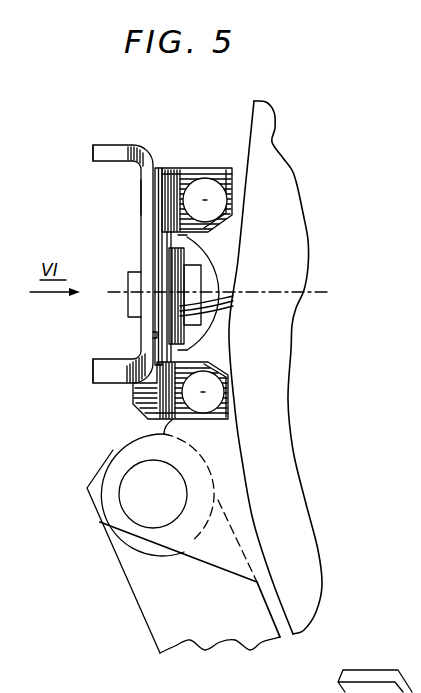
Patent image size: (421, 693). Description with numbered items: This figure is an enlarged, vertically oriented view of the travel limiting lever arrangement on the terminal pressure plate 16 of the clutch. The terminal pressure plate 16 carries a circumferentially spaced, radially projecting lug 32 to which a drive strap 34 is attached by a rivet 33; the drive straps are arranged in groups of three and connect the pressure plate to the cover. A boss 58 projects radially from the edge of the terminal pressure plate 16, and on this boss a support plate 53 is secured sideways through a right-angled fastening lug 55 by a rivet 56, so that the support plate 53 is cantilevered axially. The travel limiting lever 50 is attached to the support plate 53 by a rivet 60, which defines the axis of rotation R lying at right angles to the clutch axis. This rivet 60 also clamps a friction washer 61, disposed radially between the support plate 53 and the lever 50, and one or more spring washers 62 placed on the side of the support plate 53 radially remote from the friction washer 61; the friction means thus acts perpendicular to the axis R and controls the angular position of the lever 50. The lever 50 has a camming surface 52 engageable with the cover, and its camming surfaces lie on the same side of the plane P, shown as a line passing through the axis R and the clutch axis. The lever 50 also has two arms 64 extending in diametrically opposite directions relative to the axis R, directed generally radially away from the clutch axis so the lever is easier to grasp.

The terminal pressure plate 16 is at (295, 165).
The radially projecting lug 32 is at (119, 462).
The rivet 33 is at (133, 488).
The drive strap 34 is at (210, 611).
The travel limiting lever 50 is at (127, 142).
The camming surface 52 is at (142, 196).
The support plate 53 is at (158, 163).
The right-angled fastening lug 55 is at (222, 230).
The rivet 56 is at (220, 200).
The boss 58 is at (185, 168).
The rivet 60 is at (134, 272).
The friction washer 61 is at (153, 337).
The spring washer 62 is at (223, 307).
The arm 64 is at (93, 157).
The axis of rotation R is at (273, 292).
The plane P is at (322, 294).